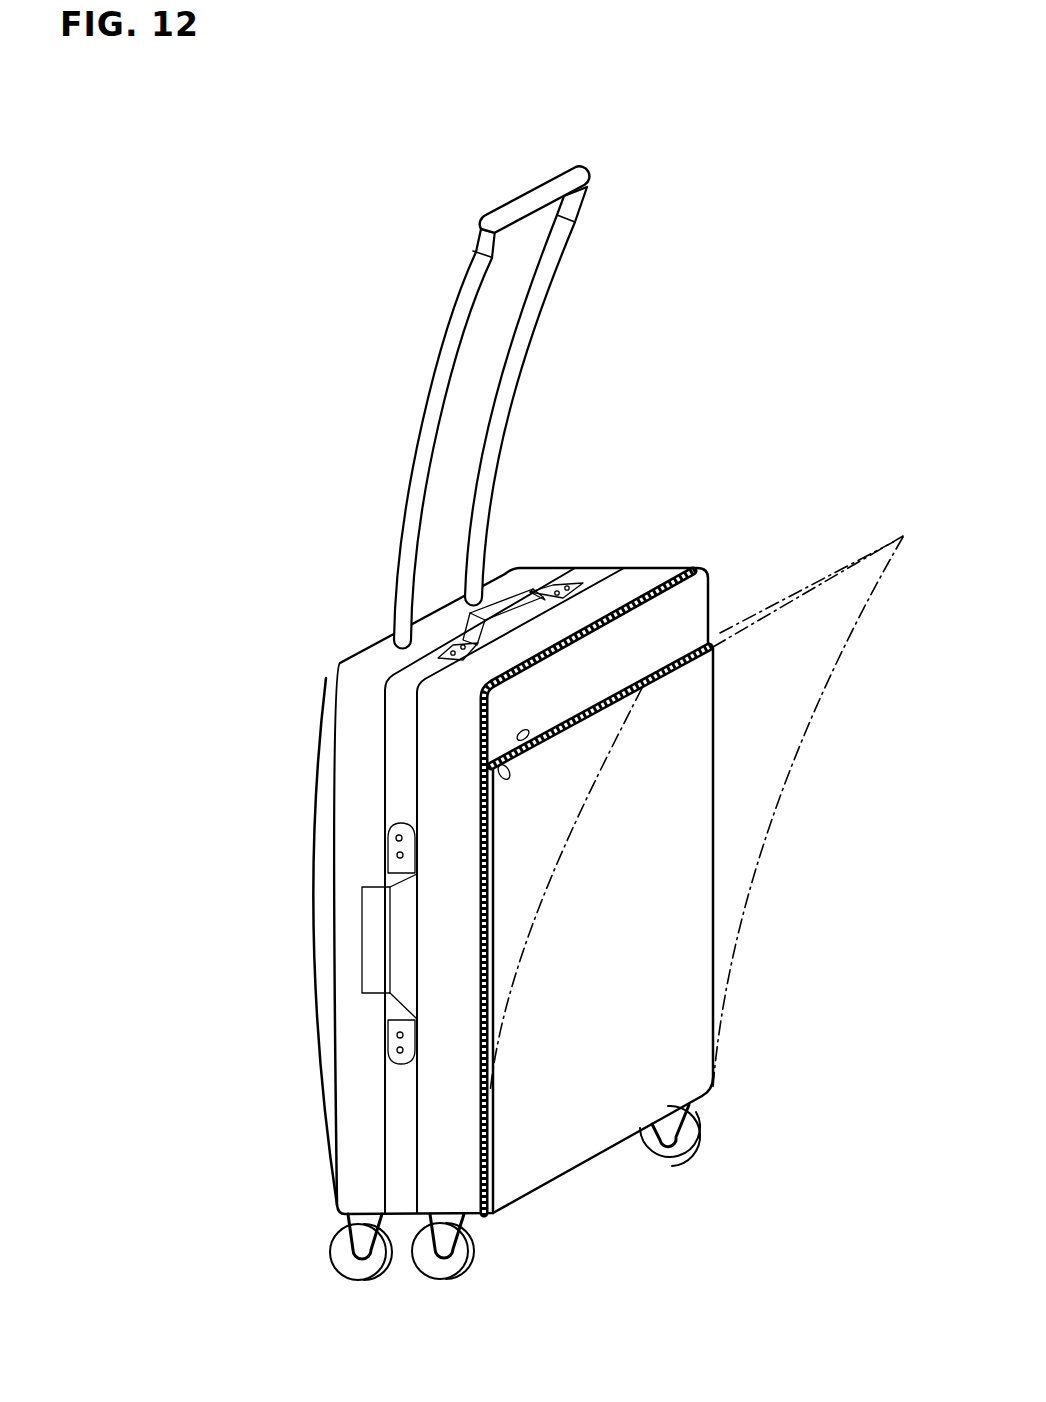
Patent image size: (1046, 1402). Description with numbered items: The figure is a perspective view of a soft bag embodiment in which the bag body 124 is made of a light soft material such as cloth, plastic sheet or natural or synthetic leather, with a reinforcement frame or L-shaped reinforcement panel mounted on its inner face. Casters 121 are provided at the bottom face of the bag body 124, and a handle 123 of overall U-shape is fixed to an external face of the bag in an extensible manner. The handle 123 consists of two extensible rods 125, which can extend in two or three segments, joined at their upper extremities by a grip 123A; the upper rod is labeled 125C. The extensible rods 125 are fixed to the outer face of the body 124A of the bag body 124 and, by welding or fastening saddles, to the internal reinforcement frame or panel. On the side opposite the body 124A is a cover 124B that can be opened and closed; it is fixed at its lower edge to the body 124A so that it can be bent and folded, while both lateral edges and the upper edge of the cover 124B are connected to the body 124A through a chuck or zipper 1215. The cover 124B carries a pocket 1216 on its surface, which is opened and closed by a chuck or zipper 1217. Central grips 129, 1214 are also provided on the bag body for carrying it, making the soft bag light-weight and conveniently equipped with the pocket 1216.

The casters 121 is at (368, 1272).
The handle 123 is at (600, 172).
The grip 123A is at (532, 197).
The bag body 124 is at (681, 535).
The body 124A is at (333, 848).
The cover 124B is at (670, 923).
The extensible rods 125 is at (436, 418).
The upper rod 125C is at (438, 375).
The central grip 129 is at (370, 962).
The central grip 1214 is at (513, 600).
The chuck or zipper 1215 is at (480, 1057).
The pocket 1216 is at (583, 697).
The chuck or zipper 1217 is at (538, 745).